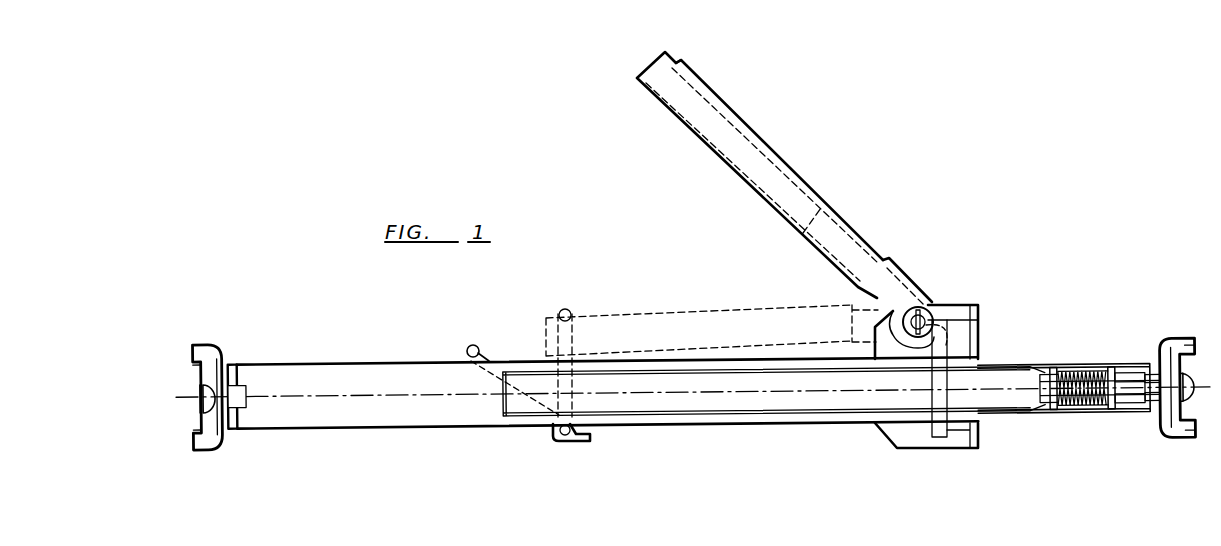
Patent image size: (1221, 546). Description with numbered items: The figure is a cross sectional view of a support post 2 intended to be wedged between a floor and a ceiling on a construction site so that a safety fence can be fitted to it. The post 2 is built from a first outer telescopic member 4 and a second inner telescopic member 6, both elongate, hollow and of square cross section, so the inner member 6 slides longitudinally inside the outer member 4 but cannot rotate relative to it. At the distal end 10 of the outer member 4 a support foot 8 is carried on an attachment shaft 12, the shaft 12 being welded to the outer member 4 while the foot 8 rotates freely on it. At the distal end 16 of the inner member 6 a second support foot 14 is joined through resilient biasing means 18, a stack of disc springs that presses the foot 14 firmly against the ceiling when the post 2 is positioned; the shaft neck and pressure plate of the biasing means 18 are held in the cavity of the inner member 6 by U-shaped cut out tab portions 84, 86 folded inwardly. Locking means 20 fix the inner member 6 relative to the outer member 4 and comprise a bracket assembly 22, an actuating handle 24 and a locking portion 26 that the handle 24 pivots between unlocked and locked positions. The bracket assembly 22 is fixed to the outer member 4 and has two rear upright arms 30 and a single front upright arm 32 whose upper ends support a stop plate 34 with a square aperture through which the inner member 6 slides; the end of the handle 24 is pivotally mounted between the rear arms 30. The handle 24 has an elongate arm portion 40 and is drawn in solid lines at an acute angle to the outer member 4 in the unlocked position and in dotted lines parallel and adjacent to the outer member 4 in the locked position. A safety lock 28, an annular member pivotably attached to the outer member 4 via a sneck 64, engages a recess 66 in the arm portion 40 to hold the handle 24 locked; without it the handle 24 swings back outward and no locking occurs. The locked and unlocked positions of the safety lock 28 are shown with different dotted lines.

The support post 2 is at (711, 457).
The first outer telescopic member 4 is at (368, 428).
The second inner telescopic member 6 is at (1011, 425).
The support foot 8 is at (206, 338).
The distal end 10 is at (233, 355).
The attachment shaft 12 is at (240, 401).
The support foot 14 is at (1174, 441).
The distal end 16 is at (1138, 422).
The resilient biasing means 18 is at (1088, 416).
The locking means 20 is at (785, 170).
The bracket assembly 22 is at (978, 352).
The actuating handle 24 is at (760, 166).
The locking portion 26 is at (933, 436).
The safety lock 28 is at (566, 309).
The upright arm 30 is at (957, 298).
The upright arm 32 is at (952, 438).
The stop plate 34 is at (984, 318).
The elongate arm portion 40 is at (885, 266).
The sneck 64 is at (577, 440).
The recess 66 is at (681, 60).
The U-shaped cut out tab portion 84 is at (1121, 366).
The U-shaped cut out tab portion 86 is at (1055, 366).